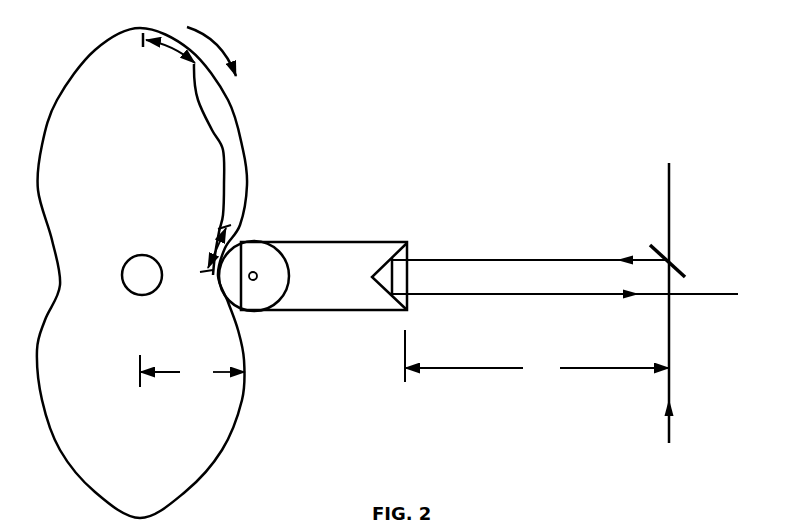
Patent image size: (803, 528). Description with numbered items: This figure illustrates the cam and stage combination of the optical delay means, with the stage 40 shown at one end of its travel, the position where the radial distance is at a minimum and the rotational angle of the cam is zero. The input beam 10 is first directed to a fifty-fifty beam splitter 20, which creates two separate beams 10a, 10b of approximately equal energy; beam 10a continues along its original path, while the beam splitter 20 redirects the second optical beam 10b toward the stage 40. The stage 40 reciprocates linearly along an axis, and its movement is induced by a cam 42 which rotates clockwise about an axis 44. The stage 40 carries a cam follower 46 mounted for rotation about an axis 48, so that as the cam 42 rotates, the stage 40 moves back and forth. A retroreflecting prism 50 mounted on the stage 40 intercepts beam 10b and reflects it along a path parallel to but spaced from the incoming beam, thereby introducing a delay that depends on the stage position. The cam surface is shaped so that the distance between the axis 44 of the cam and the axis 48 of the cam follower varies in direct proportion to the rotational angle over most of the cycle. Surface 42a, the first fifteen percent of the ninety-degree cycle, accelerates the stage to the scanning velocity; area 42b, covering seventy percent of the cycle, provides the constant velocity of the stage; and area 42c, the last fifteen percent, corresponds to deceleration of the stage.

The cam 42 is at (113, 140).
The cam surface for acceleration 42a is at (214, 248).
The cam area for constant velocity 42b is at (214, 147).
The cam area for deceleration 42c is at (168, 52).
The cam rotation axis 44 is at (128, 260).
The stage 40 is at (318, 242).
The cam follower 46 is at (286, 300).
The cam follower axis 48 is at (256, 270).
The retroreflecting prism 50 is at (375, 258).
The input beam 10 is at (669, 422).
The first beam 10a is at (669, 192).
The second optical beam 10b is at (536, 258).
The beam splitter 20 is at (683, 270).